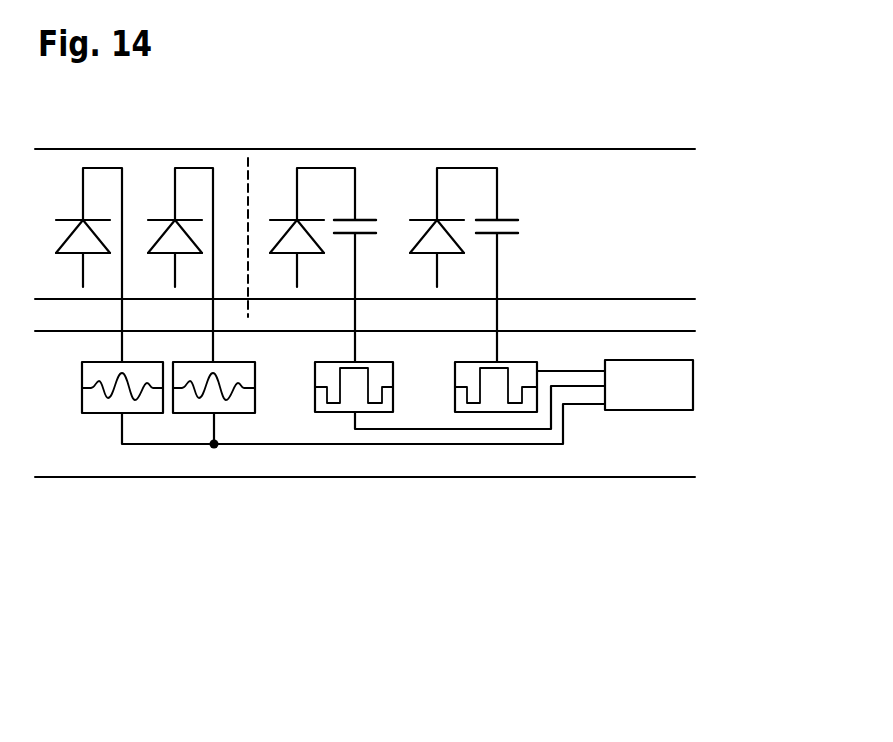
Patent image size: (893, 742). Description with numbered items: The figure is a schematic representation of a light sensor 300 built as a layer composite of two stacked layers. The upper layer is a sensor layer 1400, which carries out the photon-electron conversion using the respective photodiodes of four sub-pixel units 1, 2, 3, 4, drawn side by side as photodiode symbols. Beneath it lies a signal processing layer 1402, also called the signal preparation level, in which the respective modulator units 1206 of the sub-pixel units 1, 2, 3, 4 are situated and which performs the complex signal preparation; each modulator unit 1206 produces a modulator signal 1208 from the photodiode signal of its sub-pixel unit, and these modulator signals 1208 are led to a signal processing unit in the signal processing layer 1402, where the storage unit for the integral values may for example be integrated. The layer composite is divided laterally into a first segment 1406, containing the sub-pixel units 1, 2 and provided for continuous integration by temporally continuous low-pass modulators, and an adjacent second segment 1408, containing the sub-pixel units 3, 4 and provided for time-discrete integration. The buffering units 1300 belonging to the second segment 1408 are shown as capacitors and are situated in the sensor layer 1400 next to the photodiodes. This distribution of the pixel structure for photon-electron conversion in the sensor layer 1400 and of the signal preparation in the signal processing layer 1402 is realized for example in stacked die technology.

The light sensor 300 is at (636, 109).
The sensor layer 1400 is at (703, 149).
The signal processing layer 1402 is at (703, 331).
The first segment 1406 is at (228, 140).
The second segment 1408 is at (503, 140).
The buffering units 1300 is at (377, 217).
The modulator unit 1206 is at (333, 412).
The modulator signal 1208 is at (597, 373).
The sub-pixel unit 1 is at (162, 547).
The sub-pixel unit 2 is at (267, 547).
The sub-pixel unit 3 is at (402, 547).
The sub-pixel unit 4 is at (538, 547).